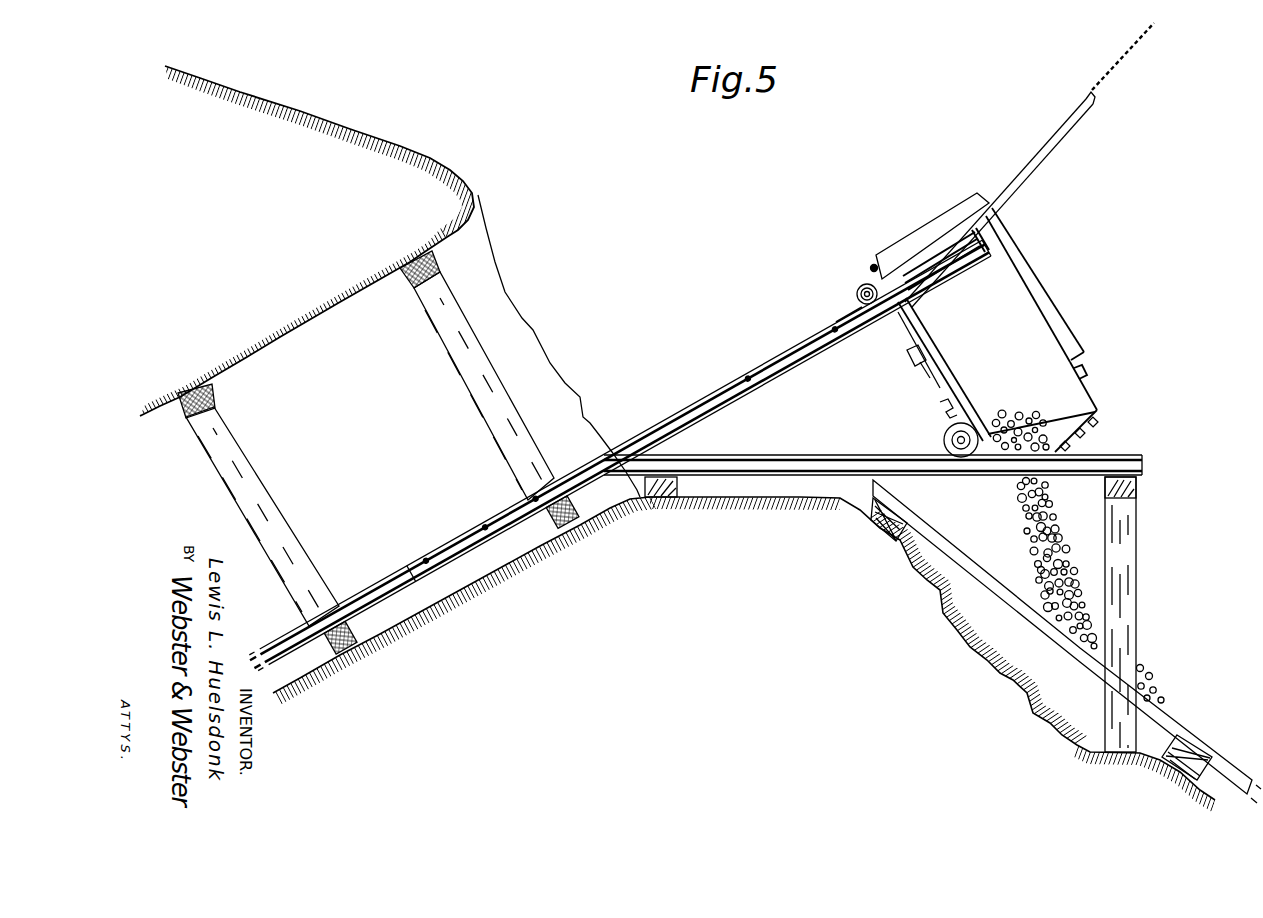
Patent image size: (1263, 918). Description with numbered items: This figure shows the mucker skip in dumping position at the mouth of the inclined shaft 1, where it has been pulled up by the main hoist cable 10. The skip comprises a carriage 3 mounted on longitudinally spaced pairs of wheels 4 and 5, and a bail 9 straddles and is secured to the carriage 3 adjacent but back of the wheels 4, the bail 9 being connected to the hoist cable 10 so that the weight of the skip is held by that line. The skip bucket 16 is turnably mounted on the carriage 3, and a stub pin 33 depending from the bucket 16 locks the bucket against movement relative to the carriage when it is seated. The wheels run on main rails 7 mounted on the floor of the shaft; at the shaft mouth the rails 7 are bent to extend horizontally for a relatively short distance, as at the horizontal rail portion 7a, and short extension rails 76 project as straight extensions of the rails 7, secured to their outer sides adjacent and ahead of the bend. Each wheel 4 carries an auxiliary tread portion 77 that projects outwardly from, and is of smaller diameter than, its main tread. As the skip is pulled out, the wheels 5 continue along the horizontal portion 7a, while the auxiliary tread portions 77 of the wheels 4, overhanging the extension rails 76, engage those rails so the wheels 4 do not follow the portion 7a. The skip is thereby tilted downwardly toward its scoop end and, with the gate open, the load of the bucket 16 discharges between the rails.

The inclined shaft 1 is at (497, 302).
The carriage 3 is at (926, 372).
The wheels 4 is at (862, 283).
The wheels 5 is at (943, 438).
The main rails 7 is at (348, 606).
The horizontal rail portion 7a is at (787, 467).
The bail 9 is at (1045, 153).
The main hoist cable 10 is at (1112, 70).
The skip bucket 16 is at (927, 220).
The stub pin 33 is at (960, 398).
The extension rails 76 is at (744, 372).
The auxiliary tread portion 77 is at (858, 300).